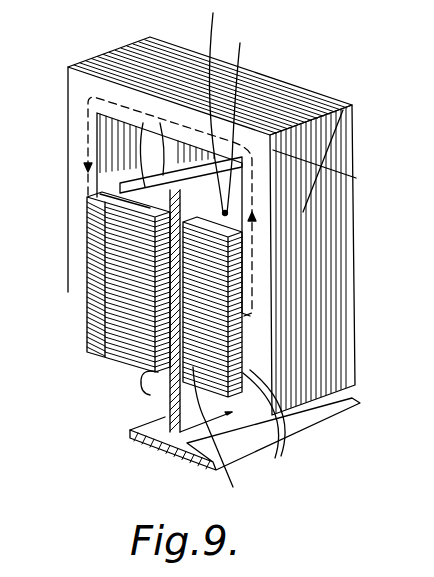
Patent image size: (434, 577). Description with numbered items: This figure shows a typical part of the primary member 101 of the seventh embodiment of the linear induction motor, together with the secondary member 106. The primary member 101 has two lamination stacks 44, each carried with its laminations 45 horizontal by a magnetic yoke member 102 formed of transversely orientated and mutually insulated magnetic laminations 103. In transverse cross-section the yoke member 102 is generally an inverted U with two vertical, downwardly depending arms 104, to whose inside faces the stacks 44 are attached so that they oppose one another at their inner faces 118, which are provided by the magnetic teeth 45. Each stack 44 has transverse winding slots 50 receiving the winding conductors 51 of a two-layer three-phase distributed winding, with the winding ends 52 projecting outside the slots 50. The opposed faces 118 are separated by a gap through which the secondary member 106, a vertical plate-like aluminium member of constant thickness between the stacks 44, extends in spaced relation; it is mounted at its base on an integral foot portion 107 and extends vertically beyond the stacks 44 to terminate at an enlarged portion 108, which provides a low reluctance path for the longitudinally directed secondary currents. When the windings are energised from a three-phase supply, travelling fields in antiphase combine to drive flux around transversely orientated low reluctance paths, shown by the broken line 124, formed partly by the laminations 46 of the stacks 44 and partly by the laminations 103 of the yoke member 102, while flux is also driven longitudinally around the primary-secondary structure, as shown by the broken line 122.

The primary member 101 is at (72, 290).
The magnetic yoke member 102 is at (172, 62).
The magnetic laminations 103 is at (125, 55).
The arms 104 is at (72, 238).
The secondary member 106 is at (182, 455).
The foot portion 107 is at (153, 452).
The enlarged portion 108 is at (163, 173).
The inner faces 118 is at (153, 340).
The broken line 122 is at (350, 105).
The broken line 124 is at (86, 110).
The lamination stack 44 is at (85, 295).
The magnetic teeth 45 is at (148, 203).
The laminations 46 is at (85, 332).
The winding slots 50 is at (55, 170).
The winding conductors 51 is at (244, 116).
The winding ends 52 is at (150, 395).